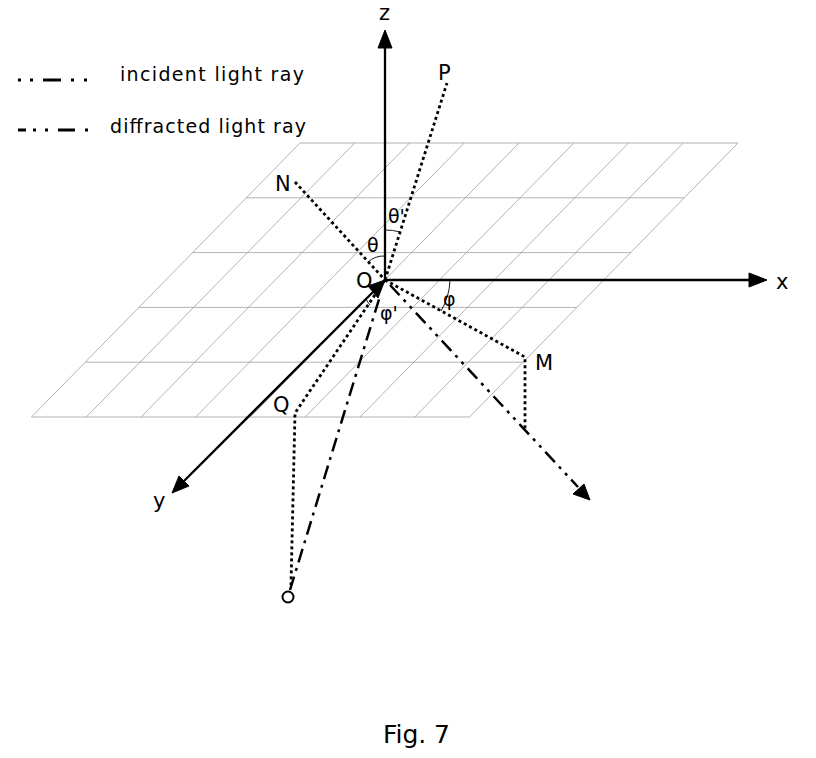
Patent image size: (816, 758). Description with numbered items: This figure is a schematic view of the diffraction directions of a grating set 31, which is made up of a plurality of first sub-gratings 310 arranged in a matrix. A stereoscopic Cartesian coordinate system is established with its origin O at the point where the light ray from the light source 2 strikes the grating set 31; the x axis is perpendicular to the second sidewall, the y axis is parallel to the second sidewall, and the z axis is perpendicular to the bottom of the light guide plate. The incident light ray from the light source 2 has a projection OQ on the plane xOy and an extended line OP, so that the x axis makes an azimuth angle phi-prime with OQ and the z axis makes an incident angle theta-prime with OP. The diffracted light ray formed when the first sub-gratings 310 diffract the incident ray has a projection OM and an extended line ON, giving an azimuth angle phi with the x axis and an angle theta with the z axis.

The grating set 31 is at (386, 226).
The first sub-grating 310 is at (712, 147).
The light source 2 is at (288, 603).